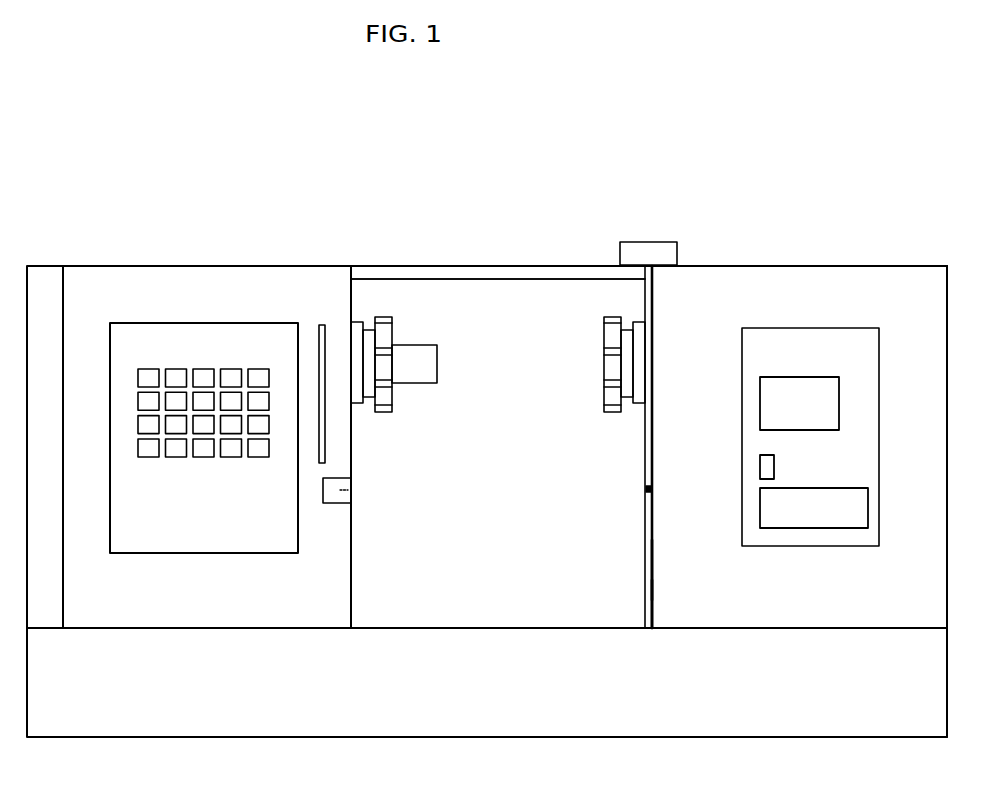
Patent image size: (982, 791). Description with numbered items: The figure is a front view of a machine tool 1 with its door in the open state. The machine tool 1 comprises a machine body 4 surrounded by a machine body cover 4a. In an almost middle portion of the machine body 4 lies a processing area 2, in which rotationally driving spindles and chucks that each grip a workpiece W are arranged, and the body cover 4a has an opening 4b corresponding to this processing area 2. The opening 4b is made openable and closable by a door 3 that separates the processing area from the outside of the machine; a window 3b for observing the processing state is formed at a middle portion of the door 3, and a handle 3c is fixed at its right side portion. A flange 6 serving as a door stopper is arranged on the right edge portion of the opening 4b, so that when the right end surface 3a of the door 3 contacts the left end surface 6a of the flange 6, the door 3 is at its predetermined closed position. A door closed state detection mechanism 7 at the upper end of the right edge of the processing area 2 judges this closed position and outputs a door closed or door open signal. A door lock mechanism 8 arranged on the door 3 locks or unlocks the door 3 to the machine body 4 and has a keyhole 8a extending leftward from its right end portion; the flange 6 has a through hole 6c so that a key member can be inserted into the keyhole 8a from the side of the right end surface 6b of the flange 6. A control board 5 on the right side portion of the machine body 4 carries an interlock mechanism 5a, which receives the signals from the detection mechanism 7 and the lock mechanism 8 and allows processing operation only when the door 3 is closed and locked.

The machine tool 1 is at (412, 230).
The processing area 2 is at (472, 293).
The door 3 is at (158, 278).
The right end surface 3a is at (352, 614).
The window 3b is at (181, 373).
The handle 3c is at (322, 323).
The machine body 4 is at (777, 288).
The machine body cover 4a is at (908, 282).
The opening 4b is at (560, 282).
The control board 5 is at (832, 340).
The interlock mechanism 5a is at (765, 468).
The flange 6 is at (650, 315).
The left end surface 6a is at (650, 572).
The right end surface 6b is at (650, 592).
The through hole 6c is at (647, 490).
The door closed state detection mechanism 7 is at (660, 242).
The door lock mechanism 8 is at (323, 500).
The keyhole 8a is at (351, 497).
The workpiece W is at (437, 347).